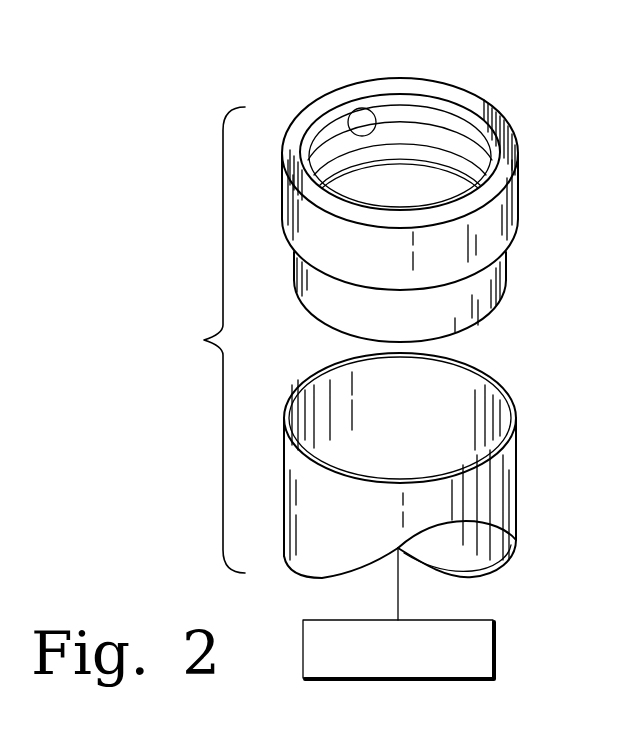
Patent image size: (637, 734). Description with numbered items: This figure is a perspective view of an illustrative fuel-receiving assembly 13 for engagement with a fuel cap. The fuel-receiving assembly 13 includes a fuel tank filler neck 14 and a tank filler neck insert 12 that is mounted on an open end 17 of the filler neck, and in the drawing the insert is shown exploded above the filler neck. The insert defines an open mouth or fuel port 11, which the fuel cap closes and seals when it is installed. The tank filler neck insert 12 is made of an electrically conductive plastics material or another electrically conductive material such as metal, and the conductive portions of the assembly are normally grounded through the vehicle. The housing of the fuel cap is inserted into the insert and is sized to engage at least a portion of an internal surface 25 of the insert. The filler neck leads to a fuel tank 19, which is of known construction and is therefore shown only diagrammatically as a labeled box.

The fuel port 11 is at (448, 127).
The tank filler neck insert 12 is at (528, 188).
The fuel-receiving assembly 13 is at (210, 340).
The fuel tank filler neck 14 is at (522, 482).
The open end 17 is at (500, 395).
The fuel tank 19 is at (495, 640).
The internal surface 25 is at (360, 108).